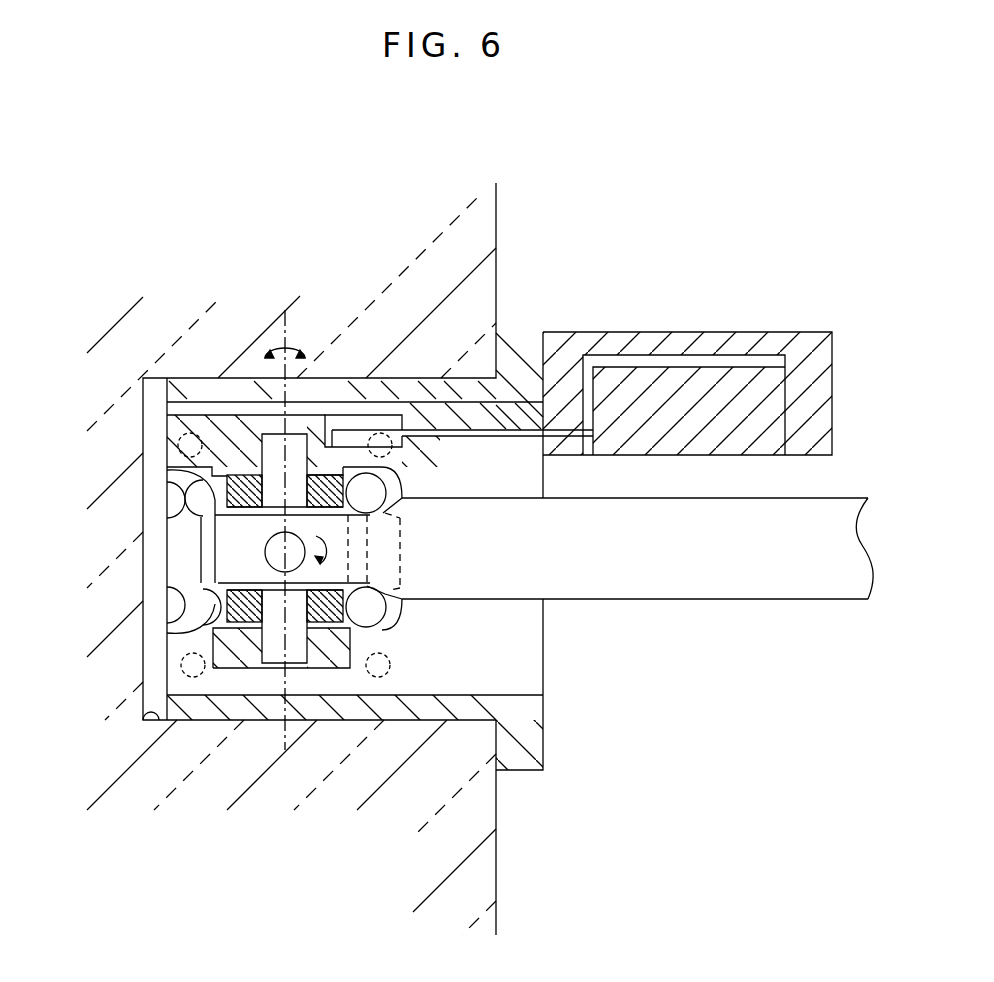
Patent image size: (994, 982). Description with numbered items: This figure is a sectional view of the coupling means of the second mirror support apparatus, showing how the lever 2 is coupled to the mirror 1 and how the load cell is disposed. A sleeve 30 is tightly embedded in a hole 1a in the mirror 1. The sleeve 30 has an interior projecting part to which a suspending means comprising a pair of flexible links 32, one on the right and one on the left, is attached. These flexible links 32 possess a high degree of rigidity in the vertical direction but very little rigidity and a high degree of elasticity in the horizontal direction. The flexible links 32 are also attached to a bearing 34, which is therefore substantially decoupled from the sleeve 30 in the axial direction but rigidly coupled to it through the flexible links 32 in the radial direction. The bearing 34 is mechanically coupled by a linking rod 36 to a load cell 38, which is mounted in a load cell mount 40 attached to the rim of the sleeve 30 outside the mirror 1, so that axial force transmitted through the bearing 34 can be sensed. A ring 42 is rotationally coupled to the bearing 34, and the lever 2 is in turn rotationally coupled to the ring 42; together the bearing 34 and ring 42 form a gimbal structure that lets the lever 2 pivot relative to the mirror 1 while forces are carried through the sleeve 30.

The mirror 1 is at (498, 220).
The hole 1a is at (138, 718).
The lever 2 is at (660, 599).
The sleeve 30 is at (540, 726).
The flexible links 32 is at (176, 568).
The bearing 34 is at (330, 660).
The linking rod 36 is at (507, 428).
The load cell 38 is at (657, 375).
The load cell mount 40 is at (736, 348).
The ring 42 is at (243, 630).